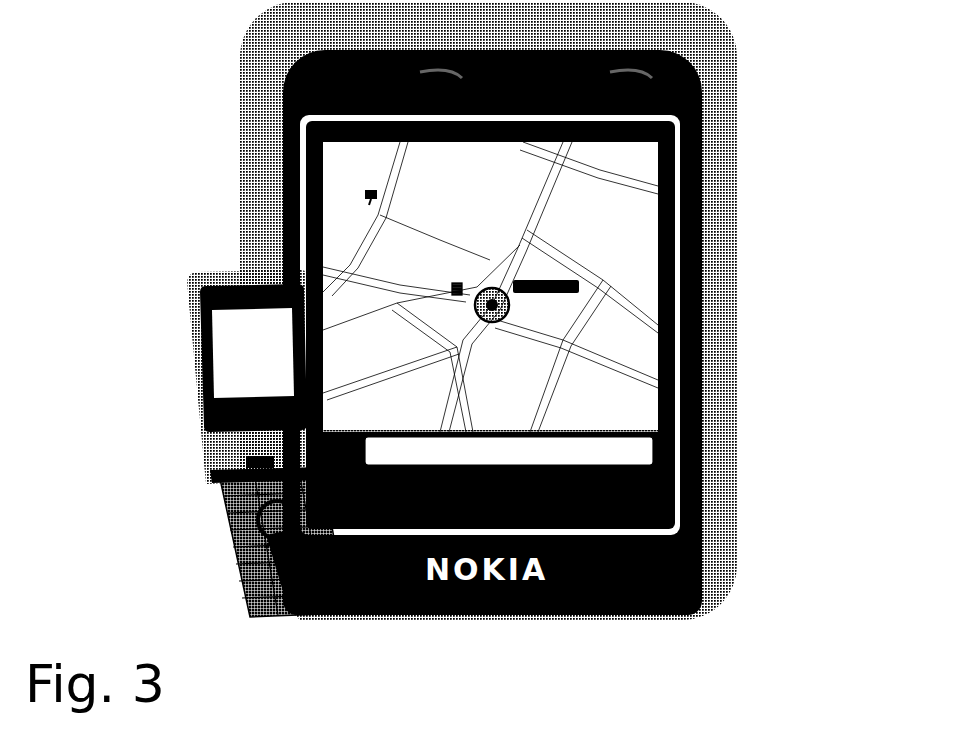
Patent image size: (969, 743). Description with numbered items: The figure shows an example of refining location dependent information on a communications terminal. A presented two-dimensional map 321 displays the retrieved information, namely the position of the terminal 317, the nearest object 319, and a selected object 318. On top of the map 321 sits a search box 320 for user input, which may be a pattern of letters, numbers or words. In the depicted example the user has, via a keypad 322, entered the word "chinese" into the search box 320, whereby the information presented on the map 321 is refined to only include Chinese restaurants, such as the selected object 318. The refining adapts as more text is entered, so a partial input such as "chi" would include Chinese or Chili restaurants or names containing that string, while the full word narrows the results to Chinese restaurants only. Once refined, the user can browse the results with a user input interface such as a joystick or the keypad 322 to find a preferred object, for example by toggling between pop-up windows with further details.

The position of the terminal 317 is at (492, 303).
The selected object 318 is at (366, 200).
The nearest object 319 is at (460, 296).
The search box 320 is at (628, 448).
The 2D map 321 is at (613, 215).
The keypad 322 is at (250, 562).